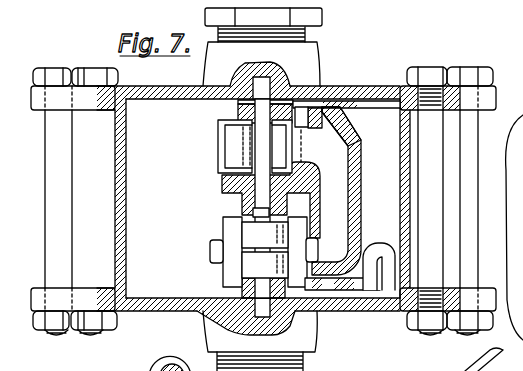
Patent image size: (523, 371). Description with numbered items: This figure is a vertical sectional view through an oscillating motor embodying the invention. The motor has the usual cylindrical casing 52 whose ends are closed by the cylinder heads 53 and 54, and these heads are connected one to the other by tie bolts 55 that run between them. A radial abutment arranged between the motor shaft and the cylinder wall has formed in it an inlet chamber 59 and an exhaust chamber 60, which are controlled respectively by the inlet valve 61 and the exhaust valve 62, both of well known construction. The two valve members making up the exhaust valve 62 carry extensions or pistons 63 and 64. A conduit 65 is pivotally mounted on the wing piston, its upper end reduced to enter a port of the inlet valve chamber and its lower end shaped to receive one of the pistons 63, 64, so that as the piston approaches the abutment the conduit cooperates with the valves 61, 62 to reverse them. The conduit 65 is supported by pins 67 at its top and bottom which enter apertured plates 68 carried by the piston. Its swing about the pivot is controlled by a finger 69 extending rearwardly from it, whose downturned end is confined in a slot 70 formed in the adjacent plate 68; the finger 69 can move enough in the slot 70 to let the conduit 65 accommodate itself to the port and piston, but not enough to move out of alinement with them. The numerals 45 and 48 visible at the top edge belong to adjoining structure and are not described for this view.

The pipe connection 45 is at (385, 6).
The pipe connection 48 is at (339, 5).
The cylindrical casing 52 is at (115, 186).
The cylinder head 53 is at (136, 86).
The cylinder head 54 is at (174, 308).
The tie bolts 55 is at (68, 163).
The inlet chamber 59 is at (240, 104).
The exhaust chamber 60 is at (255, 217).
The inlet valve 61 is at (240, 147).
The exhaust valve 62 is at (232, 255).
The piston 63 is at (314, 250).
The piston 64 is at (211, 243).
The conduit 65 is at (360, 160).
The pins 67 is at (331, 107).
The apertured plates 68 is at (317, 108).
The finger 69 is at (373, 239).
The slot 70 is at (369, 290).